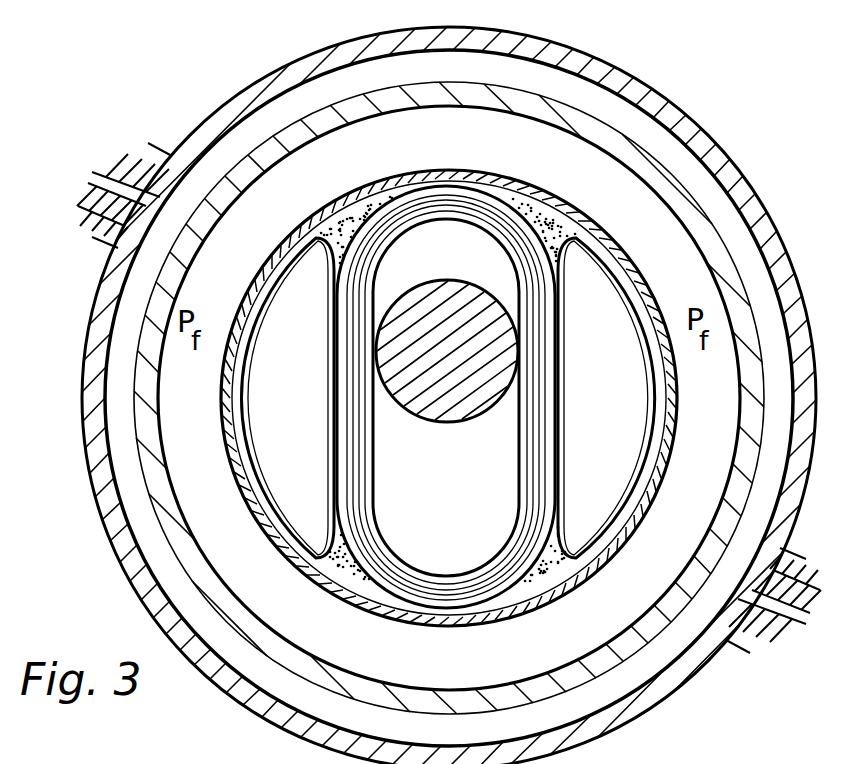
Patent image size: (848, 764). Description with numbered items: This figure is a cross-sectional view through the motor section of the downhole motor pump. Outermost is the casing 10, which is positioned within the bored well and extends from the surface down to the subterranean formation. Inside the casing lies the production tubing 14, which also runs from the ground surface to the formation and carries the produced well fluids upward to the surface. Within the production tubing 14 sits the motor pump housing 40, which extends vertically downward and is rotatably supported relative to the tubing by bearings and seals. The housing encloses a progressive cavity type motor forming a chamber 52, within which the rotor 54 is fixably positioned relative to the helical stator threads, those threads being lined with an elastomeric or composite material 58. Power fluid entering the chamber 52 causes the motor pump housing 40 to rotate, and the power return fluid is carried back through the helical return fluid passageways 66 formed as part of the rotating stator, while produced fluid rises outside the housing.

The casing 10 is at (665, 103).
The production tubing 14 is at (690, 210).
The motor pump housing 40 is at (598, 564).
The chamber 52 is at (461, 534).
The rotor 54 is at (456, 418).
The elastomeric or composite material 58 is at (488, 228).
The helical return fluid passageways 66 is at (306, 402).